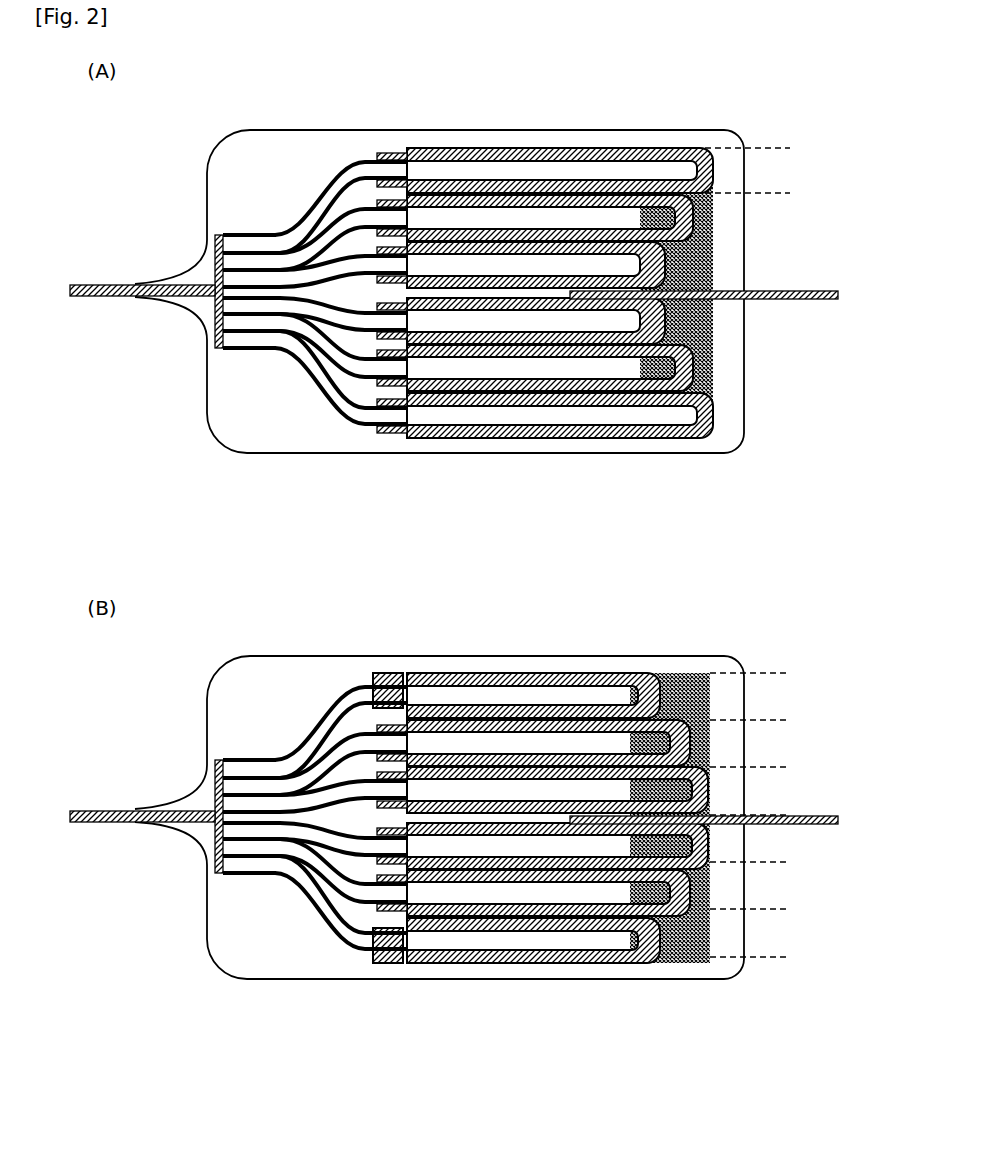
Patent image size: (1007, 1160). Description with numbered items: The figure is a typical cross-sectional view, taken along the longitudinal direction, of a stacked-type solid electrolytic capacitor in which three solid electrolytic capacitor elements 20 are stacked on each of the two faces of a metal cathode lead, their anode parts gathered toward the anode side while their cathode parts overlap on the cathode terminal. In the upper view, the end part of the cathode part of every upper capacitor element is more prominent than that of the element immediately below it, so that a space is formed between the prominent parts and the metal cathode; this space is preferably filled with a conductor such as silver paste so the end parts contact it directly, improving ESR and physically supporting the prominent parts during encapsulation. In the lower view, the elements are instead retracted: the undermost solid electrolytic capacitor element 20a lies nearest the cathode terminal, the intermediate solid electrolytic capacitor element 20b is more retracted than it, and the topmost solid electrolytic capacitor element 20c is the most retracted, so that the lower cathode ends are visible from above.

The solid electrolytic capacitor element 20 is at (790, 148).
The undermost solid electrolytic capacitor element 20a is at (775, 814).
The intermediate solid electrolytic capacitor element 20b is at (775, 814).
The topmost solid electrolytic capacitor element 20c is at (774, 815).